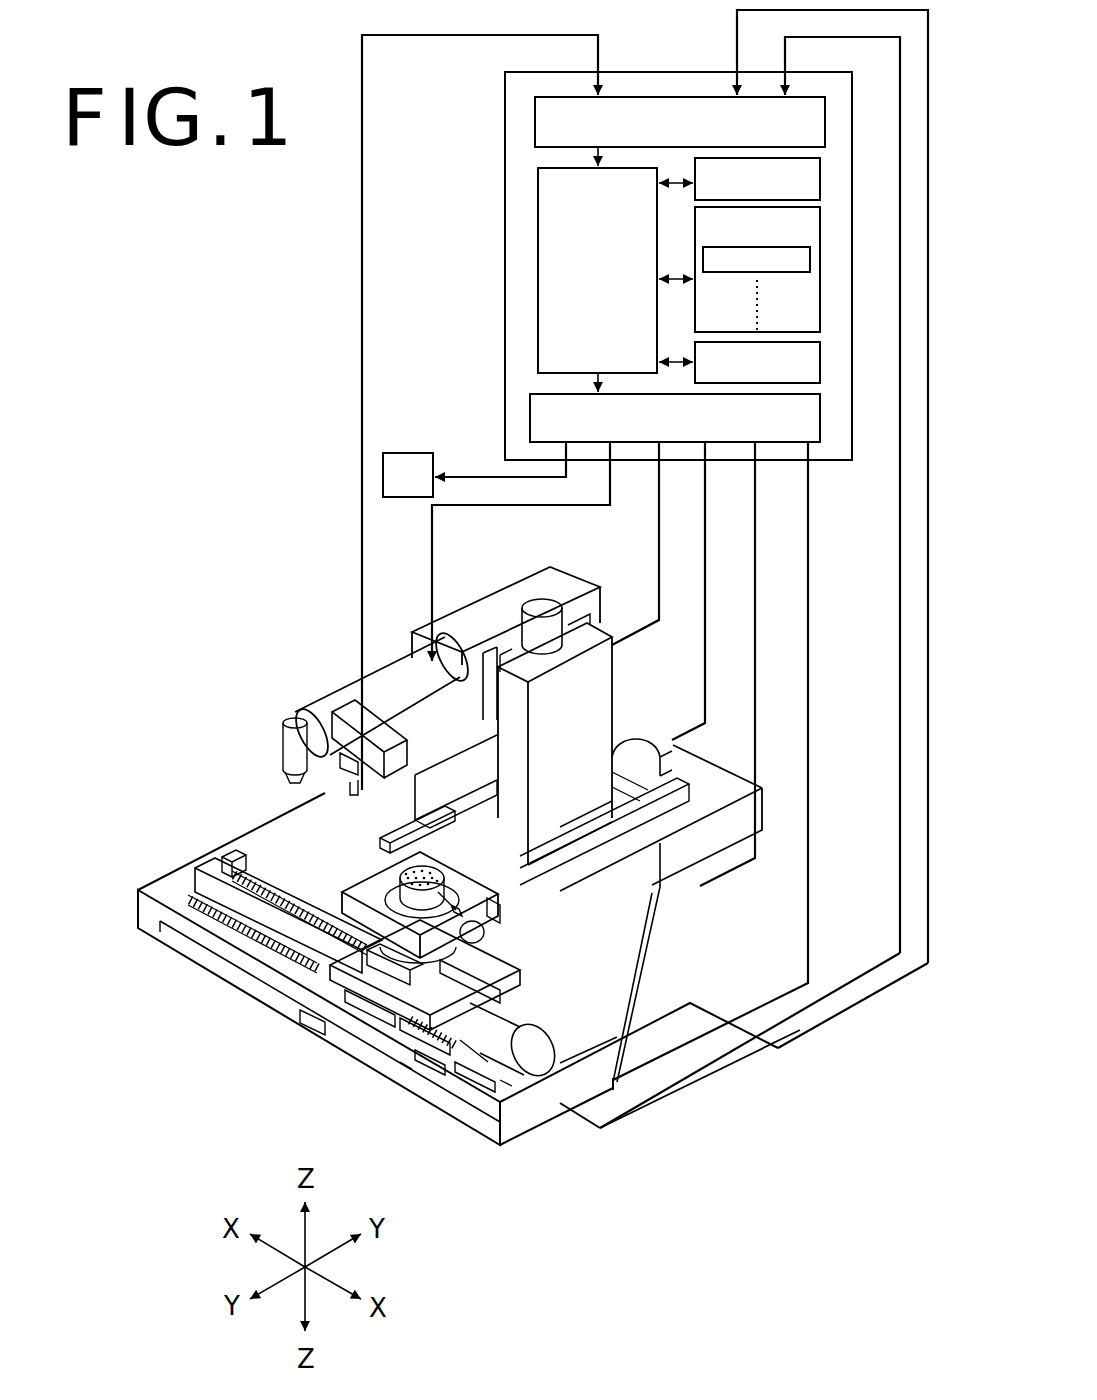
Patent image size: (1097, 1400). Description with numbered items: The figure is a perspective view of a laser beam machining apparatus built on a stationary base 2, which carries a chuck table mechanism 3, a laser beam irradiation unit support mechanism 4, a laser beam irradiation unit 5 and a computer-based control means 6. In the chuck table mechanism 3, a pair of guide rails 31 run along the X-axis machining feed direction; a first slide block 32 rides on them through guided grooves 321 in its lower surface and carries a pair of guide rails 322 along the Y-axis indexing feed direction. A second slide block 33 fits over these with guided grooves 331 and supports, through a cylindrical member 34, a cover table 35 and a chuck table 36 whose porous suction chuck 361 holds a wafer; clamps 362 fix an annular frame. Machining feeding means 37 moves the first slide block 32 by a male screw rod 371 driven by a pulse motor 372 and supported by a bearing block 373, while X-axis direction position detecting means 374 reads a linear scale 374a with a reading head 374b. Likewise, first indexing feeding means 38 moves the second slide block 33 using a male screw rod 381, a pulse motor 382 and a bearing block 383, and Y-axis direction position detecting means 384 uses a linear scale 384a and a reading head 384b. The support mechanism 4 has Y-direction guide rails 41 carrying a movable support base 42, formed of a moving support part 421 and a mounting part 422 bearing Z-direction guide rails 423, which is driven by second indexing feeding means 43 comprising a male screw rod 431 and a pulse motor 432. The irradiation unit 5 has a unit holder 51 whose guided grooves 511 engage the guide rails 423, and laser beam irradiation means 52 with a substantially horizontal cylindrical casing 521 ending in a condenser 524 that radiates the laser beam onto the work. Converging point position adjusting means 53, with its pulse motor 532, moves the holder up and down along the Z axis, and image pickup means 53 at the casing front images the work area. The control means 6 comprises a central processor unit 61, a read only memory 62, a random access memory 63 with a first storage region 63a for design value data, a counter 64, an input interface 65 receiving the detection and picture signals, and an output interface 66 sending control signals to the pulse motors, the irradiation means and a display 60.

The stationary base 2 is at (687, 947).
The chuck table mechanism 3 is at (588, 990).
The guide rails 31 is at (197, 866).
The first slide block 32 is at (400, 1050).
The guided grooves 321 is at (510, 995).
The guide rails 322 is at (345, 985).
The second slide block 33 is at (470, 953).
The guided grooves 331 is at (313, 957).
The cylindrical member 34 is at (428, 1045).
The cover table 35 is at (452, 893).
The chuck table 36 is at (383, 888).
The suction chuck 361 is at (462, 892).
The clamps 362 is at (378, 855).
The machining feeding means 37 is at (467, 1060).
The male screw rod 371 is at (222, 895).
The pulse motor 372 is at (610, 1095).
The bearing block 373 is at (228, 856).
The X-axis direction position detecting means 374 is at (425, 1062).
The linear scale 374a is at (143, 890).
The reading head 374b is at (405, 1045).
The first indexing feeding means 38 is at (484, 948).
The male screw rod 381 is at (320, 975).
The pulse motor 382 is at (478, 935).
The bearing block 383 is at (372, 1000).
The Y-axis direction position detecting means 384 is at (530, 1063).
The linear scale 384a is at (512, 1040).
The reading head 384b is at (630, 972).
The laser beam irradiation unit support mechanism 4 is at (700, 796).
The guide rails 41 is at (422, 836).
The movable support base 42 is at (618, 698).
The moving support part 421 is at (437, 768).
The mounting part 422 is at (613, 670).
The guide rails 423 is at (505, 655).
The second indexing feeding means 43 is at (672, 760).
The male screw rod 431 is at (468, 820).
The pulse motor 432 is at (662, 748).
The laser beam irradiation unit 5 is at (302, 655).
The unit holder 51 is at (514, 590).
The guided grooves 511 is at (497, 648).
The laser beam irradiation means 52 is at (338, 692).
The cylindrical casing 521 is at (328, 704).
The condenser 524 is at (282, 757).
The converging point position adjusting means 53 is at (538, 597).
The pulse motor 532 is at (553, 610).
The control means 6 is at (668, 72).
The display 60 is at (400, 453).
The central processor unit (CPU) 61 is at (538, 252).
The read only memory (ROM) 62 is at (820, 186).
The random access memory (RAM) 63 is at (796, 269).
The first storage region 63a is at (756, 260).
The counter 64 is at (820, 372).
The input interface 65 is at (535, 122).
The output interface 66 is at (530, 418).